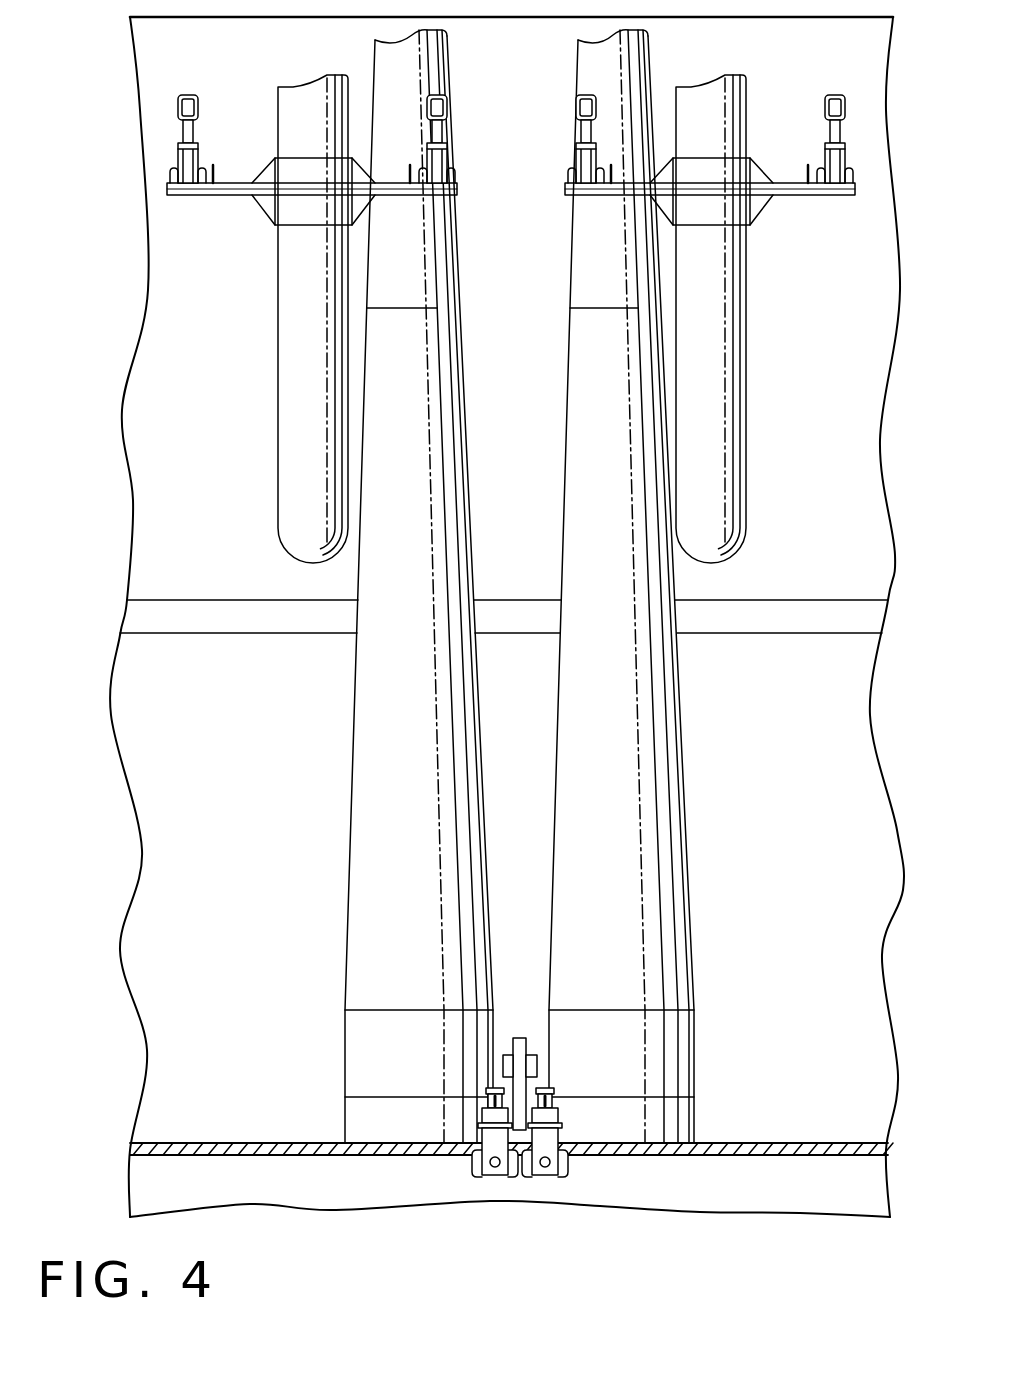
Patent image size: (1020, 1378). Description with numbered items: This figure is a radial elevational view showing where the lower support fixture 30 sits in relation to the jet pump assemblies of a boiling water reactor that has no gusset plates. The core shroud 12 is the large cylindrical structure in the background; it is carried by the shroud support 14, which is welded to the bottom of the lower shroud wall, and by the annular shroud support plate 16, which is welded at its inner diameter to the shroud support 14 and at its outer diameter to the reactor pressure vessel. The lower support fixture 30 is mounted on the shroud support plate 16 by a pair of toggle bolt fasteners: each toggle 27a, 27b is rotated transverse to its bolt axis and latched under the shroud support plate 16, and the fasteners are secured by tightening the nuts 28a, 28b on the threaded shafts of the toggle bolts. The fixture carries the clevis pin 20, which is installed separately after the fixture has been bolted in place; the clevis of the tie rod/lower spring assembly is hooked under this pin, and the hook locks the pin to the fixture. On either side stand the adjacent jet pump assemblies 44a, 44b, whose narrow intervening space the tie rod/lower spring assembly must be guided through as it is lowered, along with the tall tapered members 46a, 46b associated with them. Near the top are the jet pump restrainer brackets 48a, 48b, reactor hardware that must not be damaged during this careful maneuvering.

The core shroud 12 is at (817, 461).
The shroud support 14 is at (283, 1195).
The shroud support plate 16 is at (308, 1145).
The clevis pin 20 is at (503, 1067).
The toggle 27a is at (477, 1168).
The toggle 27b is at (563, 1168).
The nut 28a is at (482, 1113).
The nut 28b is at (558, 1115).
The lower support fixture 30 is at (521, 1038).
The jet pump assembly 44a is at (262, 368).
The jet pump assembly 44b is at (766, 338).
The tapered column 46a is at (348, 947).
The tapered column 46b is at (695, 968).
The jet pump restrainer bracket 48a is at (267, 208).
The jet pump restrainer bracket 48b is at (765, 212).